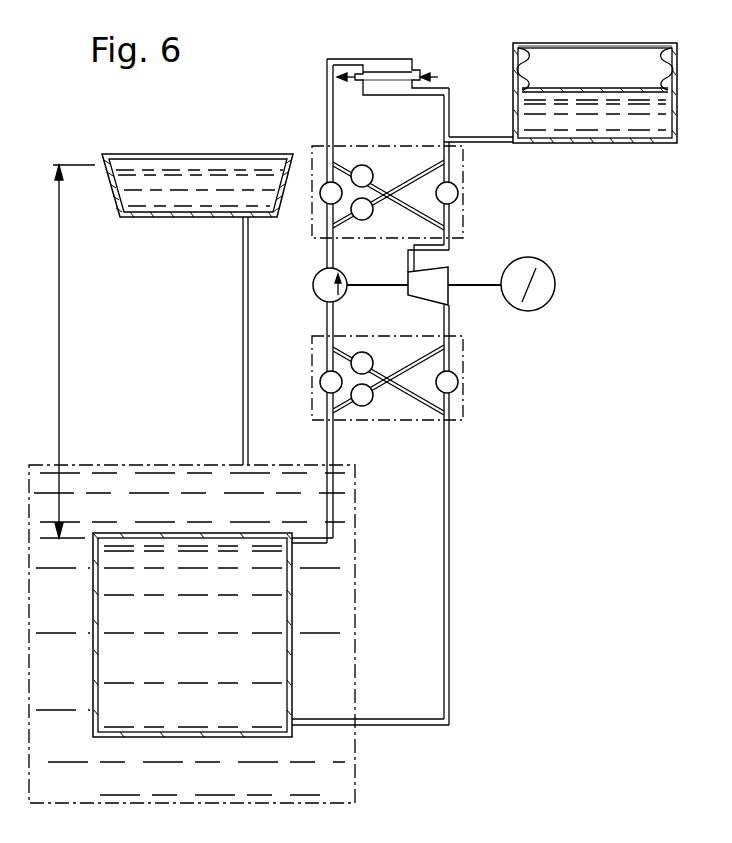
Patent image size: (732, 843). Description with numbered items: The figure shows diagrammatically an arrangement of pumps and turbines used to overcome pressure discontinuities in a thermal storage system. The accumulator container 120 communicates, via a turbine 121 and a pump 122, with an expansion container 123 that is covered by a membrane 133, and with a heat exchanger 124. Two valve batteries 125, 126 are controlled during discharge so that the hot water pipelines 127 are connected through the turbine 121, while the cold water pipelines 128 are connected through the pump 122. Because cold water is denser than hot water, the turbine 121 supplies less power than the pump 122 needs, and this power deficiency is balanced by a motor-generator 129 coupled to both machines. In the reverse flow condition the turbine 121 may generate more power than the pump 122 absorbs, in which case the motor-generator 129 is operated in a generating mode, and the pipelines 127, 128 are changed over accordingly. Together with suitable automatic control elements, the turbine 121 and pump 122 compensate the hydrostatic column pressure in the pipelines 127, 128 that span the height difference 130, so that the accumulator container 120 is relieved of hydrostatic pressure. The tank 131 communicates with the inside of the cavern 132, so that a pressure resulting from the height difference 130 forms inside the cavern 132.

The accumulator container 120 is at (94, 631).
The turbine 121 is at (445, 292).
The pump 122 is at (315, 292).
The expansion container 123 is at (590, 145).
The heat exchanger 124 is at (388, 60).
The valve battery 125 is at (465, 382).
The valve battery 126 is at (465, 194).
The hot water pipeline 127 is at (327, 107).
The cold water pipeline 128 is at (498, 85).
The motor-generator 129 is at (553, 284).
The height difference 130 is at (60, 352).
The tank 131 is at (177, 218).
The cavern 132 is at (355, 762).
The membrane 133 is at (530, 76).